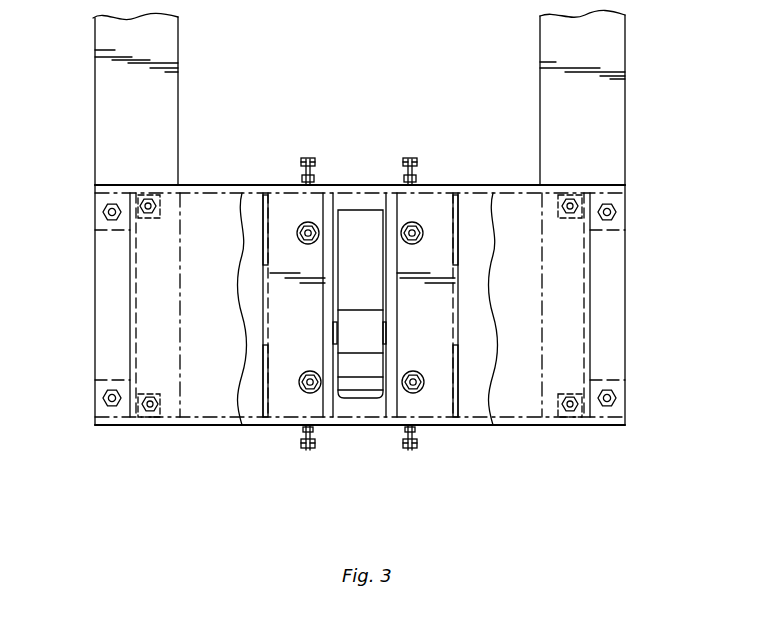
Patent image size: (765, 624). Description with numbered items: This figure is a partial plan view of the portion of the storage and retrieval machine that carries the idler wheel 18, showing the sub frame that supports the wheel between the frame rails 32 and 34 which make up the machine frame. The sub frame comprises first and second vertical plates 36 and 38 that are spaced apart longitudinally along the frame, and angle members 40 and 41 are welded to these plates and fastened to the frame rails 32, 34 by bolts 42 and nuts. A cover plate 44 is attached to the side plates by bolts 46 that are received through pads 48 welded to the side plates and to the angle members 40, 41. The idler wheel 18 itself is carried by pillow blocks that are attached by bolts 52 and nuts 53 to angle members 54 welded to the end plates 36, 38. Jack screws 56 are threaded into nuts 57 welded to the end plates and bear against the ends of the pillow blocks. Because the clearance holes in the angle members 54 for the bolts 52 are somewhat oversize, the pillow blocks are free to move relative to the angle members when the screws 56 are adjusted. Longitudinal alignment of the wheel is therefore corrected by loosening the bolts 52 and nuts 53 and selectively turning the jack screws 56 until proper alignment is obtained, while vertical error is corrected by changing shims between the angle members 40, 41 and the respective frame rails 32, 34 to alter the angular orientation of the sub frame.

The idler wheel 18 is at (355, 209).
The frame rail 32 is at (150, 116).
The frame rail 34 is at (587, 116).
The first vertical plate 36 is at (258, 184).
The second vertical plate 38 is at (253, 427).
The angle member 40 is at (96, 292).
The angle member 41 is at (626, 290).
The bolt 42 is at (617, 213).
The cover plate 44 is at (217, 266).
The bolt 46 is at (150, 200).
The pad 48 is at (161, 214).
The bolt 52 is at (303, 225).
The nut 53 is at (310, 372).
The angle member 54 is at (338, 418).
The jack screw 56 is at (309, 170).
The nut 57 is at (300, 162).